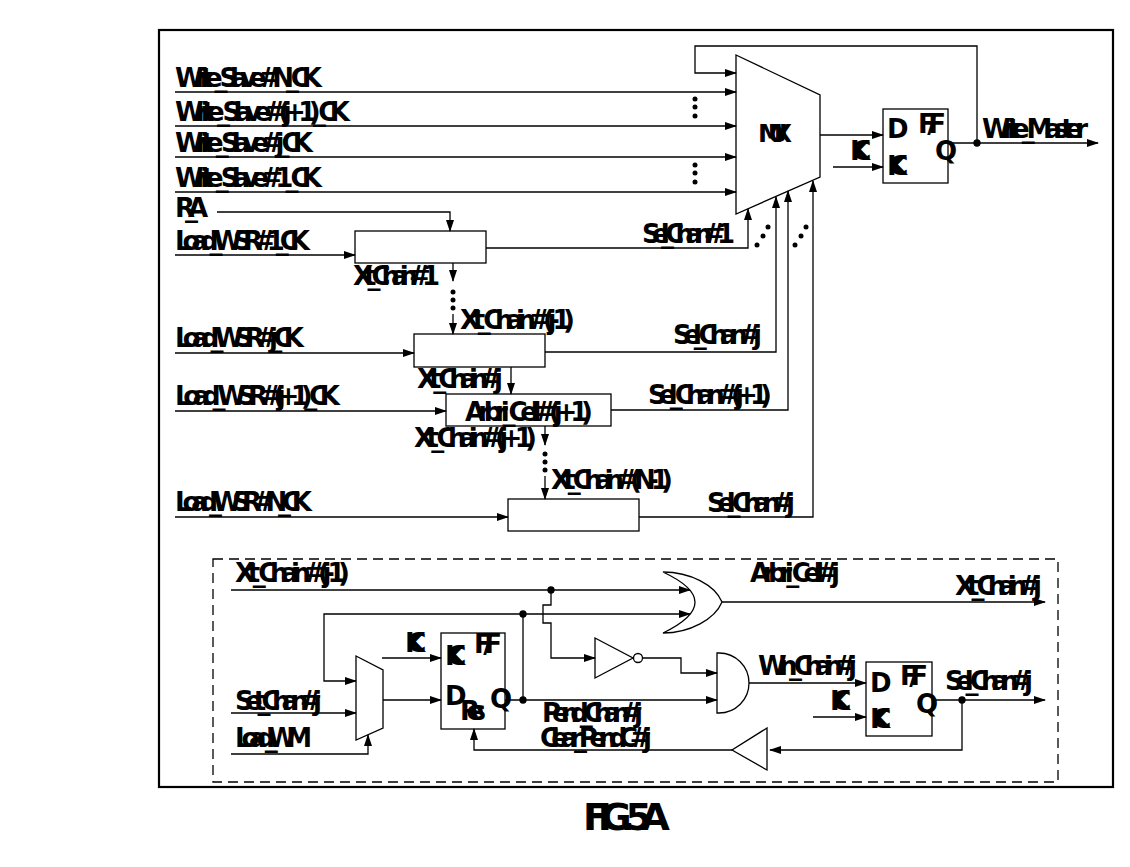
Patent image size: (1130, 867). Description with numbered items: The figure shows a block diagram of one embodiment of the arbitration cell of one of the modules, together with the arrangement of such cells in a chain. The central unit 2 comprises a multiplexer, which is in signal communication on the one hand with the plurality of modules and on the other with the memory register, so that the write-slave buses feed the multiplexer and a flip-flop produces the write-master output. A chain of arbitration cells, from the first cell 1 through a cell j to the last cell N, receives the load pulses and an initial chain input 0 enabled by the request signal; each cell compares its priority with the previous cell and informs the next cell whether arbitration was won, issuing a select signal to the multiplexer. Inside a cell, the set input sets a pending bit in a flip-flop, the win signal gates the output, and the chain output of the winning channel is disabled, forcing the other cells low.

The chain input Xt_Chain# 0 is at (391, 215).
The arbitration cell Arbri_Cell# 1 is at (420, 247).
The arbitration cell Arbri_Cell# j is at (479, 350).
The arbitration cell Arbri_Cell# N is at (573, 515).
The central unit 2 is at (369, 698).